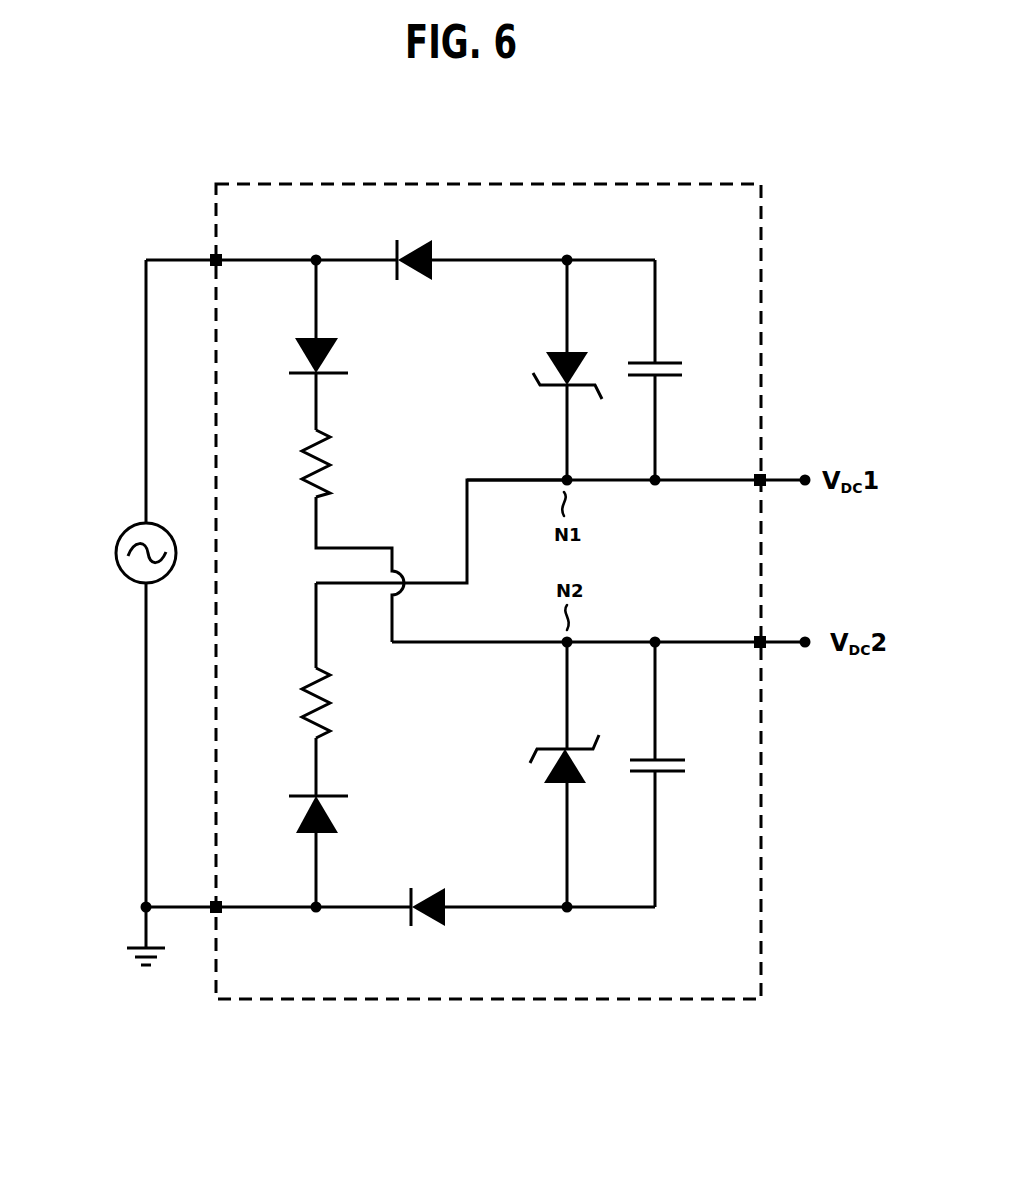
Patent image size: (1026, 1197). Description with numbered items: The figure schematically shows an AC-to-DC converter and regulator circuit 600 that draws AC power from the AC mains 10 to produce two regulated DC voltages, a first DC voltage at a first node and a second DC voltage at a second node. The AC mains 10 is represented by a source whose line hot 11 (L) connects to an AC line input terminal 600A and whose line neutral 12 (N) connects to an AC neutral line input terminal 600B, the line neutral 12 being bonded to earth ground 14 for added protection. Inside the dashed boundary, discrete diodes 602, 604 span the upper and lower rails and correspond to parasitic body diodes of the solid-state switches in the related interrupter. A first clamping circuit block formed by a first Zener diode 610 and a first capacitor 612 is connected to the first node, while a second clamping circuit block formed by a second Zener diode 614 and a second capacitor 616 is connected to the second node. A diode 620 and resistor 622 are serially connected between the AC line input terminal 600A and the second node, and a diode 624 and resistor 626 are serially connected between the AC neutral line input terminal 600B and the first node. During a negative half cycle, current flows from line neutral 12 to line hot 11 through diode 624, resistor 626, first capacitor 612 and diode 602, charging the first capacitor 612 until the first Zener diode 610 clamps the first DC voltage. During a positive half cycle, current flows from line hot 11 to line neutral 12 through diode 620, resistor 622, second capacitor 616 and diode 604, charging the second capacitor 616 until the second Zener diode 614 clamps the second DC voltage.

The AC mains 10 is at (117, 556).
The line hot 11 is at (146, 305).
The line neutral 12 is at (146, 849).
The earth ground 14 is at (120, 948).
The AC-to-DC converter and regulator circuit 600 is at (252, 184).
The AC line input terminal 600A is at (212, 256).
The AC neutral line input terminal 600B is at (212, 916).
The diode 602 is at (437, 276).
The diode 604 is at (448, 924).
The first Zener diode 610 is at (582, 352).
The first capacitor 612 is at (680, 358).
The second Zener diode 614 is at (578, 784).
The second capacitor 616 is at (680, 777).
The diode 620 is at (306, 338).
The resistor 622 is at (311, 441).
The diode 624 is at (310, 834).
The resistor 626 is at (317, 680).